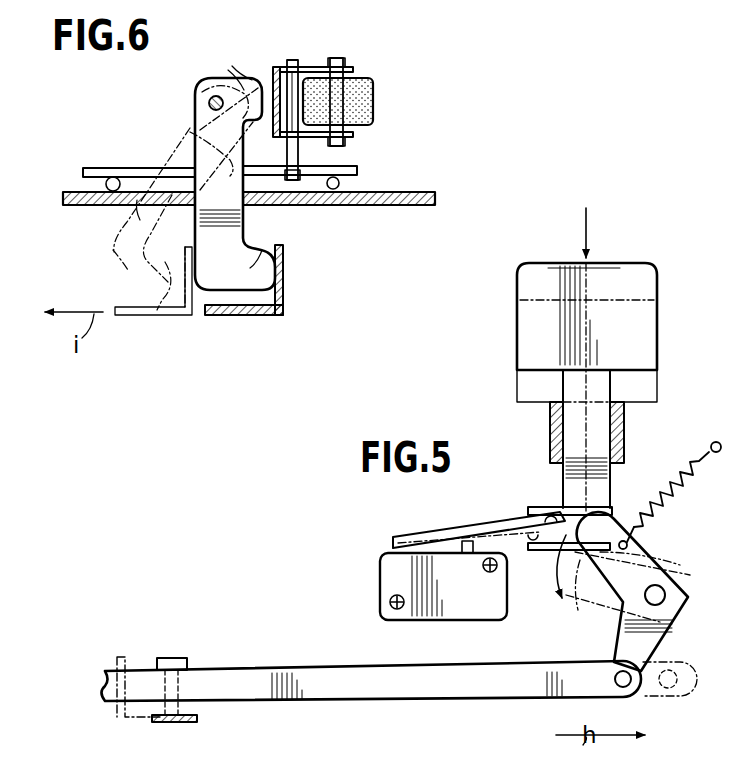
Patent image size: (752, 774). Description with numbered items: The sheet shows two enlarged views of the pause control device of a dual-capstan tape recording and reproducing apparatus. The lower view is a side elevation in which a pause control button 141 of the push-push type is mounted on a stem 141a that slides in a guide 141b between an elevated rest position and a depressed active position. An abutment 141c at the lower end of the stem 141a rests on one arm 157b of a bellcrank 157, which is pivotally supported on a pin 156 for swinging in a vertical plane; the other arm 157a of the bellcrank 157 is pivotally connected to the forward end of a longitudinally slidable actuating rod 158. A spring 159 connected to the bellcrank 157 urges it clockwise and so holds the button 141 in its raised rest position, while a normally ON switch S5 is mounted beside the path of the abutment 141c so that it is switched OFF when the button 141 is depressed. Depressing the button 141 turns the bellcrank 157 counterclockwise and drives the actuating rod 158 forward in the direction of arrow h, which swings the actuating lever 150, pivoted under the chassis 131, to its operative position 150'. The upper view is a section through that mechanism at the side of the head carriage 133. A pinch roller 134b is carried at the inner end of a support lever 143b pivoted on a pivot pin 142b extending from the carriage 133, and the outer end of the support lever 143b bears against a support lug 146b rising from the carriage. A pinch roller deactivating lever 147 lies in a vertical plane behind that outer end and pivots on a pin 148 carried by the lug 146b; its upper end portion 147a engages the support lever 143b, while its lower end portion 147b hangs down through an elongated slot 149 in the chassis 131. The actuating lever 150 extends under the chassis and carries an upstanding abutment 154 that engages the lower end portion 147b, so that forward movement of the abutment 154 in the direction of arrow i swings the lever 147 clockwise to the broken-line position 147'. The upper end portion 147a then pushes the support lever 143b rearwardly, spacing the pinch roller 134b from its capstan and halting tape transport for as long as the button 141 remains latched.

In FIG. 6, the chassis 131 is at (362, 199).
In FIG. 6, the head carriage 133 is at (131, 170).
In FIG. 6, the pinch roller 134b is at (362, 102).
In FIG. 5, the pause control button 141 is at (654, 376).
In FIG. 5, the stem 141a is at (563, 475).
In FIG. 5, the guide 141b is at (628, 430).
In FIG. 5, the abutment 141c is at (526, 510).
In FIG. 6, the pivot pin 142b is at (296, 60).
In FIG. 6, the support lever 143b is at (271, 70).
In FIG. 6, the support lug 146b is at (190, 132).
In FIG. 6, the pinch roller deactivating lever 147 is at (246, 184).
In FIG. 6, the upper end portion 147a is at (238, 82).
In FIG. 6, the lower end portion 147b is at (260, 268).
In FIG. 6, the displaced position of lever 147' is at (103, 219).
In FIG. 6, the pin 148 is at (208, 104).
In FIG. 6, the elongated slot 149 is at (137, 200).
In FIG. 6, the actuating lever 150 is at (271, 334).
In FIG. 5, the actuating lever 150 is at (157, 709).
In FIG. 6, the operative position of actuating lever 150' is at (144, 334).
In FIG. 6, the upstanding abutment 154 is at (284, 275).
In FIG. 5, the pin 156 is at (665, 596).
In FIG. 5, the bellcrank 157 is at (663, 636).
In FIG. 5, the arm of bellcrank 157a is at (645, 700).
In FIG. 5, the arm of bellcrank 157b is at (650, 556).
In FIG. 5, the actuating rod 158 is at (338, 702).
In FIG. 5, the spring 159 is at (708, 466).
In FIG. 5, the switch S5 is at (390, 584).